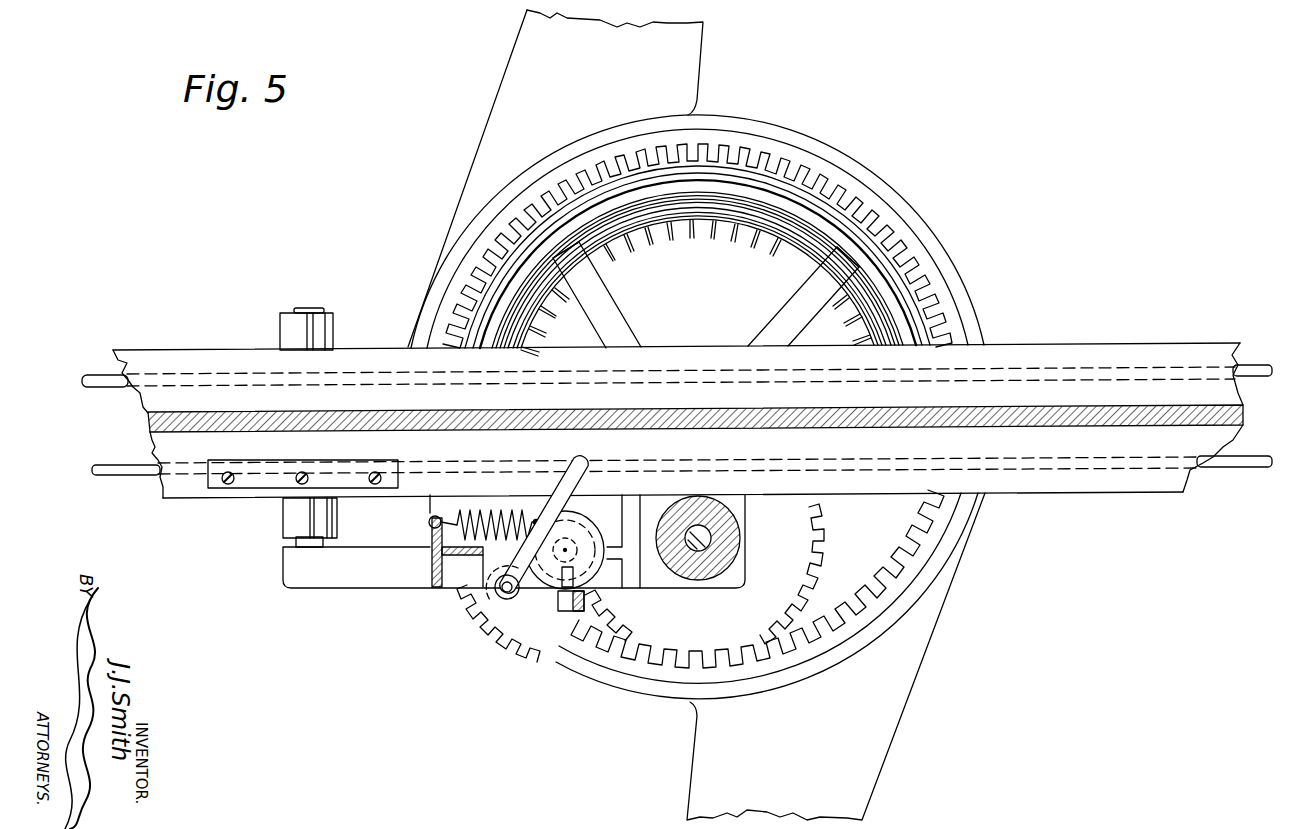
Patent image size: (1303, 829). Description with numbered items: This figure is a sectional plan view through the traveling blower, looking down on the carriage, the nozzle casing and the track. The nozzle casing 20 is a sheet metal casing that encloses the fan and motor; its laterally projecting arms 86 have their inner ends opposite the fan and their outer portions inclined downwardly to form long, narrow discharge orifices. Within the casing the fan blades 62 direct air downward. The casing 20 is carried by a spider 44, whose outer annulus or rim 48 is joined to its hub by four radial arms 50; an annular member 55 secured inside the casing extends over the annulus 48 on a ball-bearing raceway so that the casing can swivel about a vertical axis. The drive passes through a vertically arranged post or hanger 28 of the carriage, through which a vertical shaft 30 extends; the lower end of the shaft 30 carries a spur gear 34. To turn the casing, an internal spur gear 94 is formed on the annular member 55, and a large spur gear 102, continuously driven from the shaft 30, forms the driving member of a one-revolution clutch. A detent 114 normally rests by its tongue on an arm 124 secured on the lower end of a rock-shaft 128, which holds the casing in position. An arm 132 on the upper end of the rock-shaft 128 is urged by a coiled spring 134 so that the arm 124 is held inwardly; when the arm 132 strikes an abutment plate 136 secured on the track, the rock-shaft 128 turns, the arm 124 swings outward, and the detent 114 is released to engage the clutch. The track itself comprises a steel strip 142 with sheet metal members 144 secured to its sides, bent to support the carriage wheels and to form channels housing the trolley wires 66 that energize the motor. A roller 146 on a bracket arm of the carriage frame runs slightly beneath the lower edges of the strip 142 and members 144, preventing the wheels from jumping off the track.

The sheet metal casing 20 is at (870, 176).
The post or hanger 28 is at (732, 546).
The vertical shaft 30 is at (722, 566).
The spur gear 34 is at (740, 617).
The spider 44 is at (615, 306).
The outer annulus or rim 48 is at (890, 297).
The radial arms 50 is at (598, 308).
The annular member 55 is at (910, 238).
The blades 62 is at (778, 258).
The trolley wires 66 is at (1250, 363).
The laterally projecting arms 86 is at (677, 56).
The internal spur gear 94 is at (753, 150).
The large spur gear 102 is at (500, 620).
The detent 114 is at (563, 608).
The arm 124 is at (540, 607).
The rock-shaft 128 is at (500, 600).
The arm 132 is at (586, 463).
The coiled spring 134 is at (505, 507).
The abutment plate 136 is at (243, 495).
The steel strip 142 is at (1057, 427).
The sheet metal members 144 is at (1120, 344).
The roller 146 is at (283, 330).